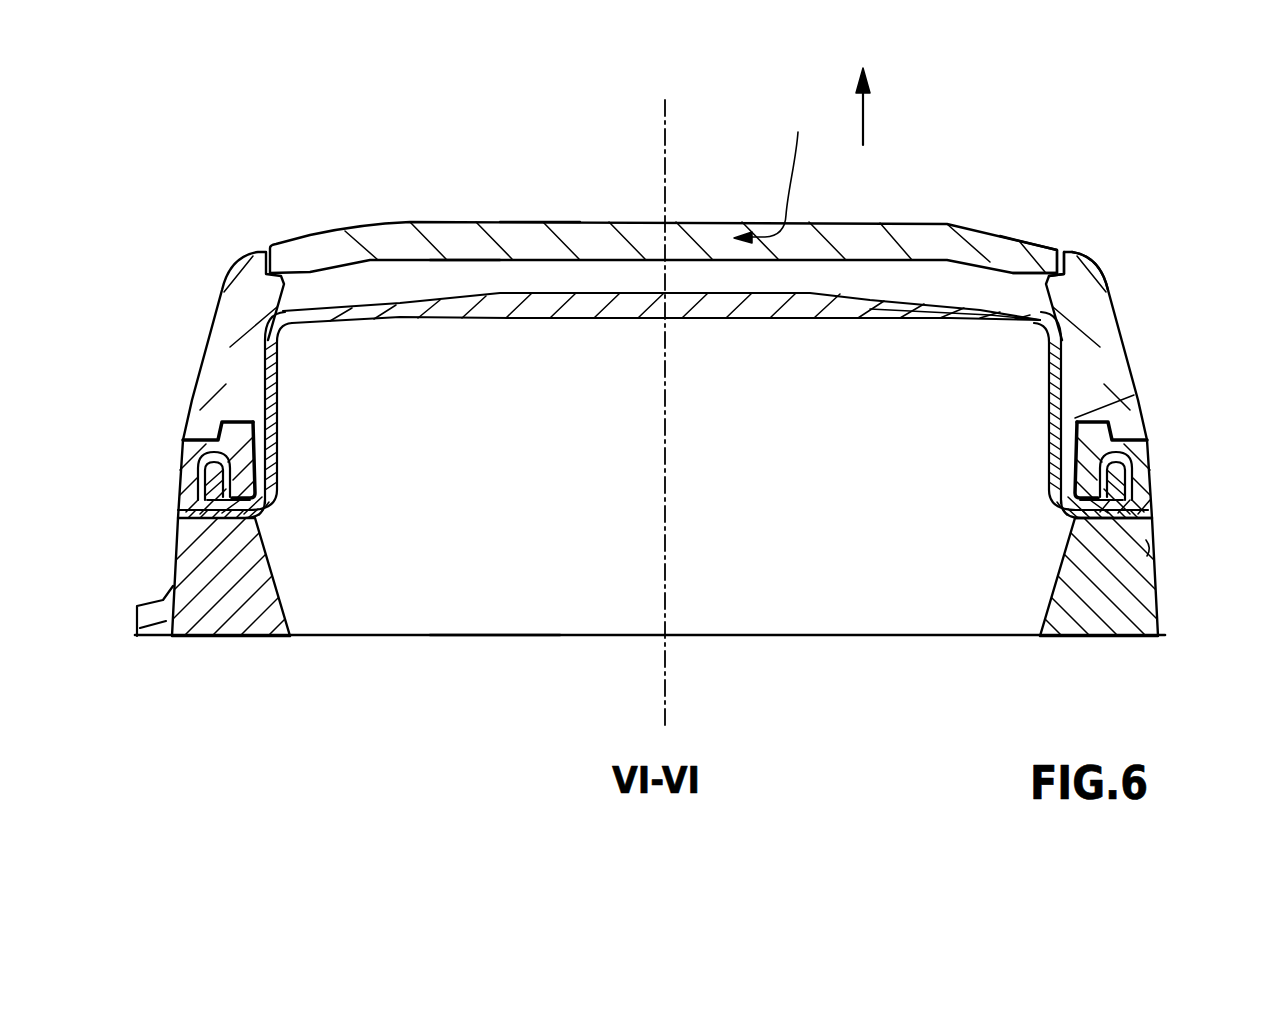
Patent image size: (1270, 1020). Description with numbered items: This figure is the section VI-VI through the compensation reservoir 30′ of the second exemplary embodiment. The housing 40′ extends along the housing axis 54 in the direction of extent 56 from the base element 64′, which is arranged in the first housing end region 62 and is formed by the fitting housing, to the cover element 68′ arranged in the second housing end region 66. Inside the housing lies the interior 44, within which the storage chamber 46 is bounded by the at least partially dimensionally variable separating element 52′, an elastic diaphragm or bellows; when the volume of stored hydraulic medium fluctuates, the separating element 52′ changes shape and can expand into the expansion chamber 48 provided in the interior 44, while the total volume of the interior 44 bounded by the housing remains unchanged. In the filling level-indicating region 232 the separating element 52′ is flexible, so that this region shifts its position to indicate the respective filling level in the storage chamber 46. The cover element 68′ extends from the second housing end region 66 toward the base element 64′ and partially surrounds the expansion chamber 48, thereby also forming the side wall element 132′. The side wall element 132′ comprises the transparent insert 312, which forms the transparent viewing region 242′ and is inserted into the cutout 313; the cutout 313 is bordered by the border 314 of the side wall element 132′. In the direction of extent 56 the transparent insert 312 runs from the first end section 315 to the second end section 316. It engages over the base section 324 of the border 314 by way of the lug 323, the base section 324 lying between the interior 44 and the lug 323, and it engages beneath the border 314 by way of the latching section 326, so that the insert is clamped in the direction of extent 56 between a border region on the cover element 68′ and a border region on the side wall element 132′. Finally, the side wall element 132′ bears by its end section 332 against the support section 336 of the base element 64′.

The compensation reservoir 30′ is at (337, 206).
The housing 40′ is at (395, 221).
The expansion chamber 48 is at (462, 275).
The cover element 68′ is at (540, 240).
The separating element 52′ is at (605, 305).
The housing axis 54 is at (665, 150).
The direction of extent 56 is at (866, 118).
The second housing end region 66 is at (773, 173).
The border 314 is at (1047, 246).
The cutout 313 is at (1063, 262).
The second end section 316 is at (1097, 268).
The transparent insert 312 is at (1120, 320).
The transparent viewing region 242′ is at (1112, 381).
The first end section 315 is at (1128, 426).
The lug 323 is at (1135, 434).
The side wall element 132′ is at (1130, 450).
The end section 332 is at (1140, 507).
The support section 336 is at (1150, 535).
The base element 64′ is at (213, 588).
The latching section 326 is at (975, 316).
The interior 44 is at (1021, 405).
The base section 324 is at (1085, 432).
The storage chamber 46 is at (328, 608).
The first housing end region 62 is at (472, 623).
The filling level-indicating region 232 is at (280, 378).